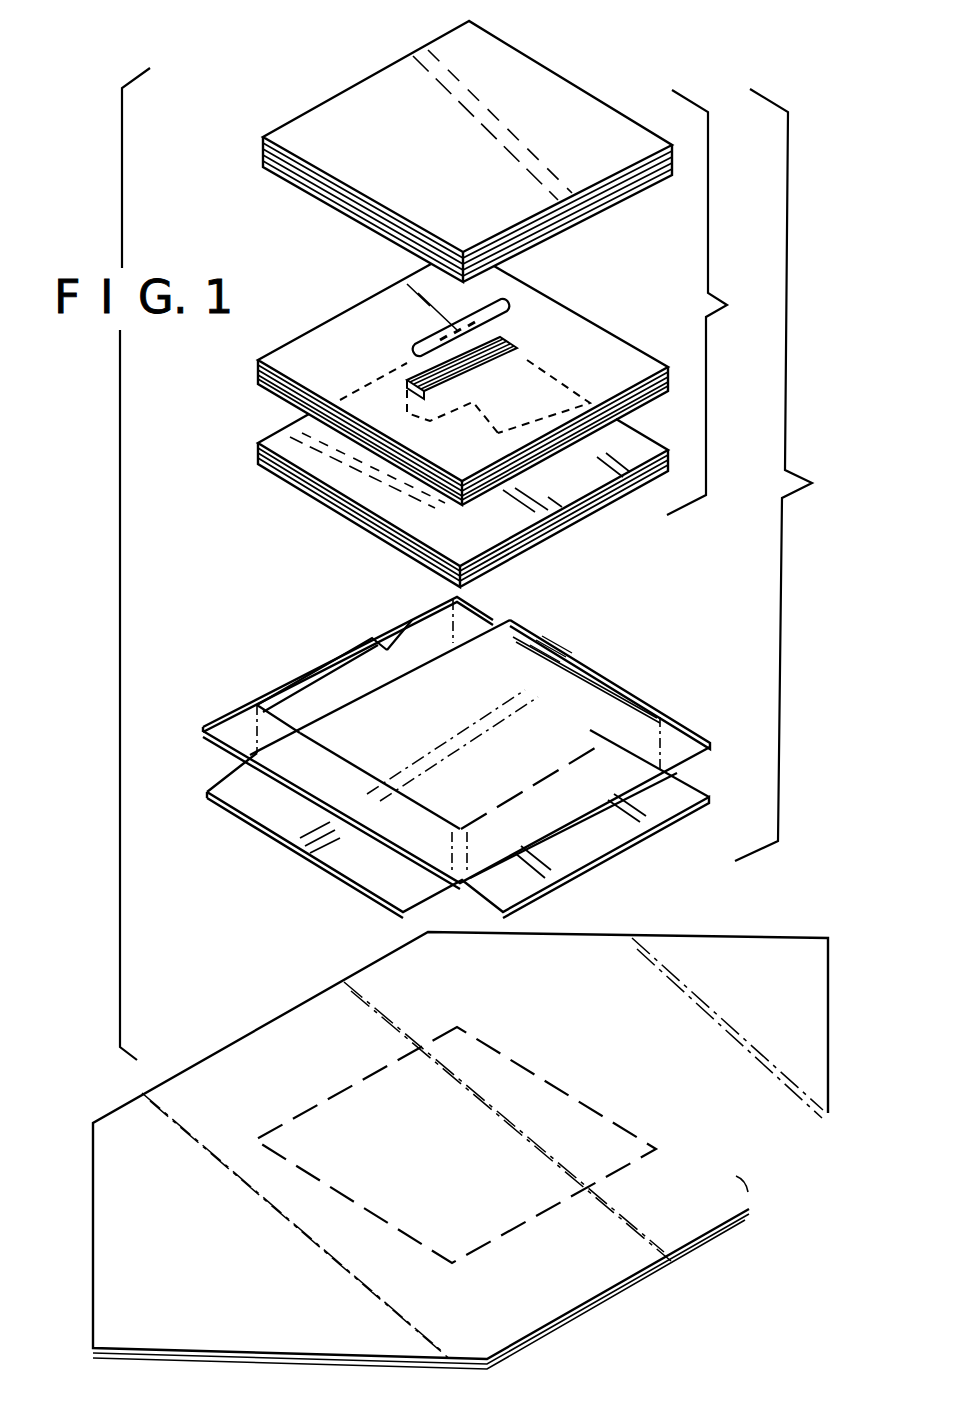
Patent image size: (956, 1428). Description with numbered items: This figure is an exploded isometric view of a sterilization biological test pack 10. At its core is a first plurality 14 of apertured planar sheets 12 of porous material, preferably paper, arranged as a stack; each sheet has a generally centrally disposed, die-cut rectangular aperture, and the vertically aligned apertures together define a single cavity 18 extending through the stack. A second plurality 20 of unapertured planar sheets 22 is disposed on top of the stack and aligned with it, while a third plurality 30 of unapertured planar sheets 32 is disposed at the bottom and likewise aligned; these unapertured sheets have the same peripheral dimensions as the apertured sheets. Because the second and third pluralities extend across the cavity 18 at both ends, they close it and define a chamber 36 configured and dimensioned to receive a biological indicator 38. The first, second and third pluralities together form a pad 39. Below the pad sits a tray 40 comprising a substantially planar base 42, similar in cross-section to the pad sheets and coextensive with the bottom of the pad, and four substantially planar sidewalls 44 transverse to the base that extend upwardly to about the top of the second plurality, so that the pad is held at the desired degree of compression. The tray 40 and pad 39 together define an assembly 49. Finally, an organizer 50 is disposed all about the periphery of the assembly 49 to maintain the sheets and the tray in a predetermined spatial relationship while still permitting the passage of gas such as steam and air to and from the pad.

The sterilization biological test pack 10 is at (338, 50).
The apertured planar sheets 12 is at (258, 374).
The first plurality of apertured sheets 14 is at (346, 311).
The cavity 18 is at (516, 346).
The second plurality of unapertured sheets 20 is at (302, 114).
The unapertured planar sheets 22 is at (262, 152).
The third plurality of unapertured sheets 30 is at (321, 502).
The unapertured planar sheets 32 is at (258, 460).
The chamber 36 is at (497, 424).
The biological indicator 38 is at (505, 305).
The pad 39 is at (714, 302).
The tray 40 is at (561, 700).
The base 42 is at (477, 697).
The sidewalls 44 is at (337, 687).
The assembly 49 is at (790, 475).
The organizer 50 is at (271, 1020).